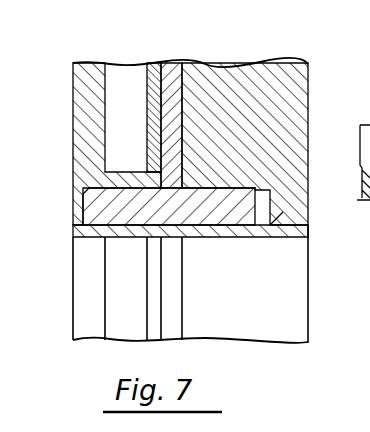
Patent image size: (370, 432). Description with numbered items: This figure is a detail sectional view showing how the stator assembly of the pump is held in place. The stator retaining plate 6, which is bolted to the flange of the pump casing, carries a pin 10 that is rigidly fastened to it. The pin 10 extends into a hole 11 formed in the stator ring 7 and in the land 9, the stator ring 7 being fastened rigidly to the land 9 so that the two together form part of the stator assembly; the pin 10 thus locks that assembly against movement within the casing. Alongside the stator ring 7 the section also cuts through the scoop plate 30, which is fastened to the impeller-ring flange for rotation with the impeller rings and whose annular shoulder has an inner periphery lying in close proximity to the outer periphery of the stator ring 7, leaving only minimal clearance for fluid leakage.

The stator retaining plate 6 is at (92, 87).
The stator ring 7 is at (173, 90).
The land 9 is at (295, 118).
The pin 10 is at (100, 209).
The hole 11 is at (283, 223).
The scoop plate 30 is at (151, 78).